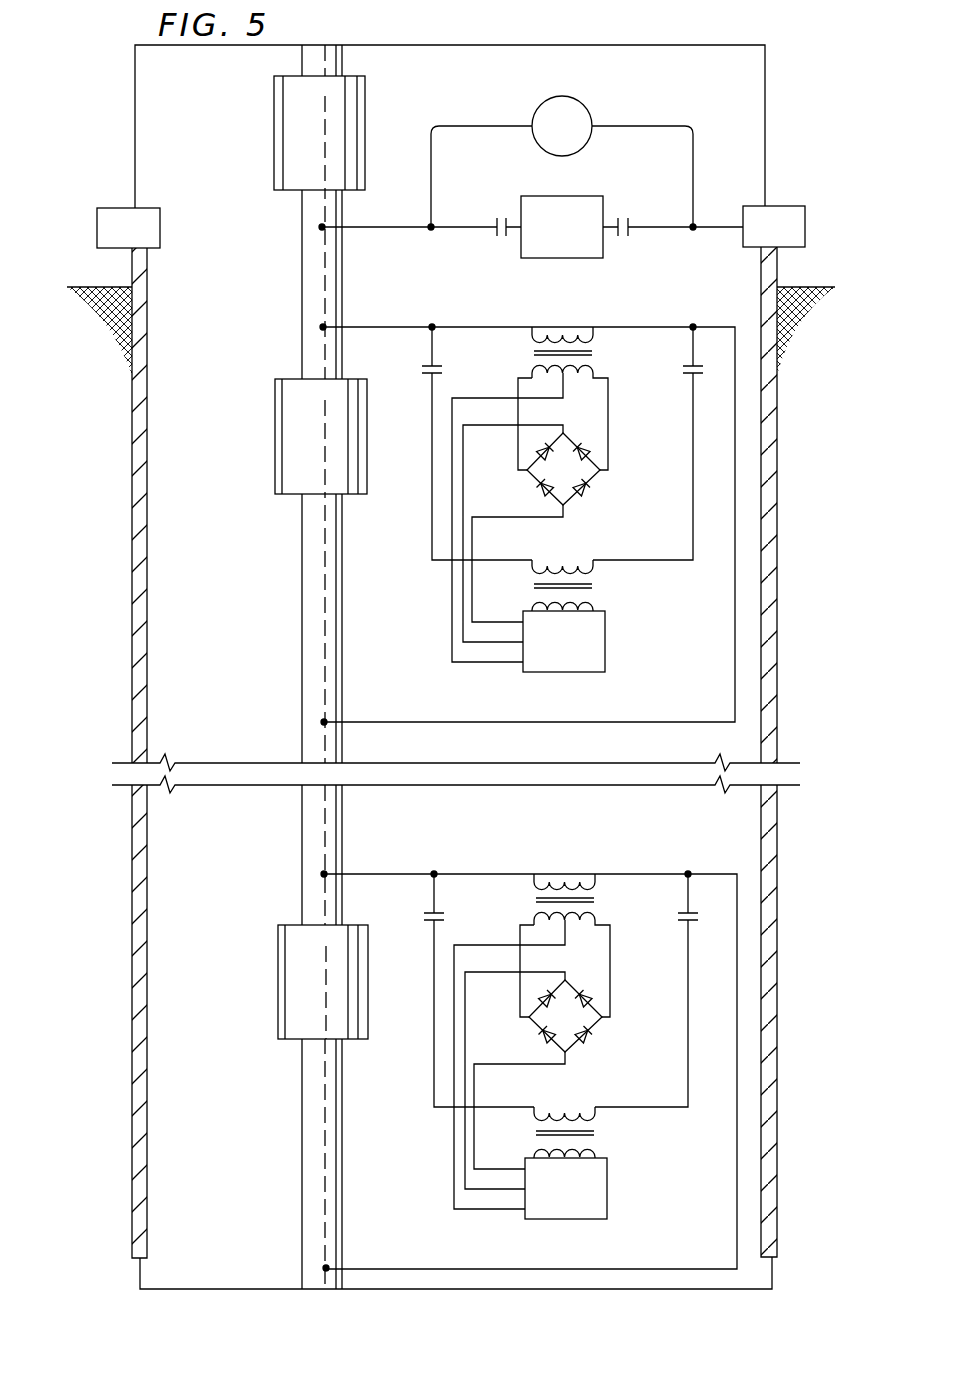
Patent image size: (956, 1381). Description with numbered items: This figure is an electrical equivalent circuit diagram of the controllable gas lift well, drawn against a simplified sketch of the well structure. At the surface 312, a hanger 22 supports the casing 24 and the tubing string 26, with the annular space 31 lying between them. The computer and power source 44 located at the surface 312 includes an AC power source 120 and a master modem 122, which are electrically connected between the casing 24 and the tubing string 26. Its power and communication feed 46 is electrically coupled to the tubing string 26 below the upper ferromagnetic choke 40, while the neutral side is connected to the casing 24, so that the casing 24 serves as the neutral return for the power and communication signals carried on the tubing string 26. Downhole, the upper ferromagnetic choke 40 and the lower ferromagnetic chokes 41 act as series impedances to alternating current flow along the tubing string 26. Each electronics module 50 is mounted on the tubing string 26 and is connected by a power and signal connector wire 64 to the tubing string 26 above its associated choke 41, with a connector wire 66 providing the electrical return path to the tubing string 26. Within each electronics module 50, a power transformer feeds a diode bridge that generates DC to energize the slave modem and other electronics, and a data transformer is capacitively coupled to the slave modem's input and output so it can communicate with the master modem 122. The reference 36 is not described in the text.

The hanger 22 is at (770, 92).
The casing 24 is at (132, 685).
The tubing string 26 is at (345, 302).
The annular space 31 is at (187, 301).
The return conductor 36 is at (778, 1272).
The upper ferromagnetic choke 40 is at (274, 155).
The lower ferromagnetic choke 41 is at (275, 458).
The computer and power source 44 is at (531, 158).
The power and communication feed 46 is at (458, 227).
The electronics module 50 is at (658, 300).
The power and signal connector wire 64 is at (313, 329).
The connector wire 66 is at (313, 725).
The AC power source 120 is at (584, 104).
The master modem 122 is at (580, 196).
The surface 312 is at (80, 282).